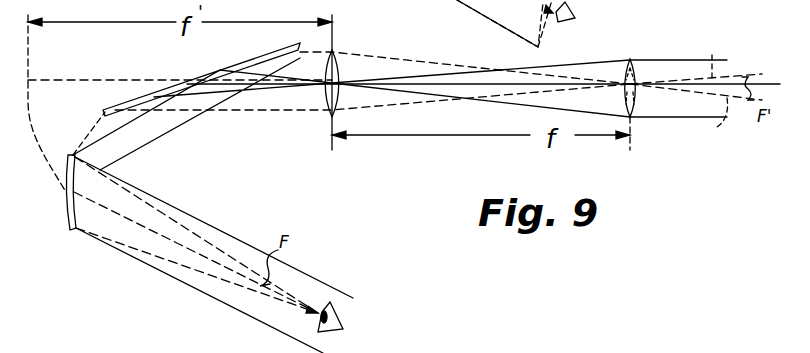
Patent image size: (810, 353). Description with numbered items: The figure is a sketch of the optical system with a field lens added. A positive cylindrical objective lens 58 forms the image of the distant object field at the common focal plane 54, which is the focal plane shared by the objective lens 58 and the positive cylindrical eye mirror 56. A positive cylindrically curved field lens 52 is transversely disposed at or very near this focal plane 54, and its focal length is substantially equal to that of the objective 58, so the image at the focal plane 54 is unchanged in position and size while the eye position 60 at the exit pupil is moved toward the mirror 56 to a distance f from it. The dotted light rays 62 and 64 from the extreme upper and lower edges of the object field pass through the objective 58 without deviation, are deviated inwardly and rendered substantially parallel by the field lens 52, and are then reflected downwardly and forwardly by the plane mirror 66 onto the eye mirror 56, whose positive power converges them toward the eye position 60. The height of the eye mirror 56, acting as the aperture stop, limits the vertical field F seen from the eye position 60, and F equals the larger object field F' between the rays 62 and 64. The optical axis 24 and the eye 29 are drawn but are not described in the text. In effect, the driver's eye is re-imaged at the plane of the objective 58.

The optical axis 24 is at (490, 84).
The eye 29 is at (577, 14).
The field lens 52 is at (340, 67).
The common focal plane 54 is at (328, 143).
The eye mirror 56 is at (68, 224).
The objective lens 58 is at (636, 72).
The eye position 60 is at (344, 313).
The light ray 62 is at (719, 55).
The light ray 64 is at (731, 120).
The plane mirror 66 is at (188, 92).